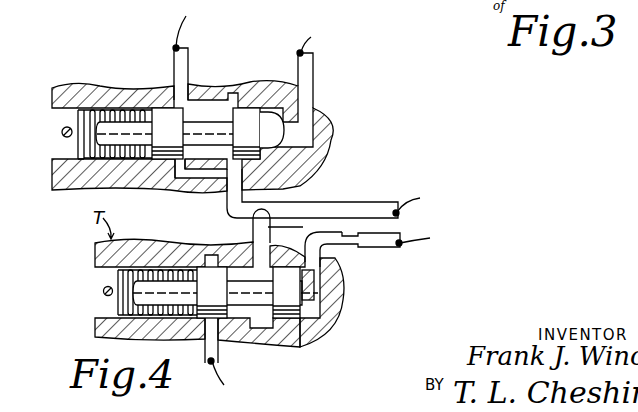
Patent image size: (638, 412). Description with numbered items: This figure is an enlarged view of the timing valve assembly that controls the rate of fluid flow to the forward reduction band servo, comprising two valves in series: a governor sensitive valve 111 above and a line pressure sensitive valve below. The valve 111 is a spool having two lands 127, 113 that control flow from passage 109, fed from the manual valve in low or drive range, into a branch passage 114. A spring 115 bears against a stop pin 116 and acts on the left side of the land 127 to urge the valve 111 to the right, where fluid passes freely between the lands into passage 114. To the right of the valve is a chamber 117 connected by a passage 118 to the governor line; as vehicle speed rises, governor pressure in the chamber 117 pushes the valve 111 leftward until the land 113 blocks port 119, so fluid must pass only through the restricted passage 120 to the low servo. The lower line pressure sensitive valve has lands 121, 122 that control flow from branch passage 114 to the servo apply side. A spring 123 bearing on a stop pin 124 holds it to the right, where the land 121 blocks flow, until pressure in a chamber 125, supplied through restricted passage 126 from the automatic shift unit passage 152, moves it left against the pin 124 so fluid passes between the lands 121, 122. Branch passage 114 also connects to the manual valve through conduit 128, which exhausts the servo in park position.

The passage 109 is at (178, 70).
The governor sensitive valve 111 is at (205, 123).
The land 113 is at (248, 117).
The branch passage 114 is at (222, 206).
The spring 115 is at (78, 114).
The stop pin 116 is at (66, 135).
The chamber 117 is at (272, 152).
The passage 118 is at (304, 72).
The port 119 is at (235, 180).
The restricted passage 120 is at (230, 196).
The land 121 is at (205, 335).
The land 122 is at (283, 312).
The spring 123 is at (118, 272).
The stop pin 124 is at (104, 292).
The chamber 125 is at (322, 305).
The restricted passage 126 is at (347, 243).
The land 127 is at (166, 118).
The conduit 128 is at (345, 205).
The passage 152 is at (367, 240).